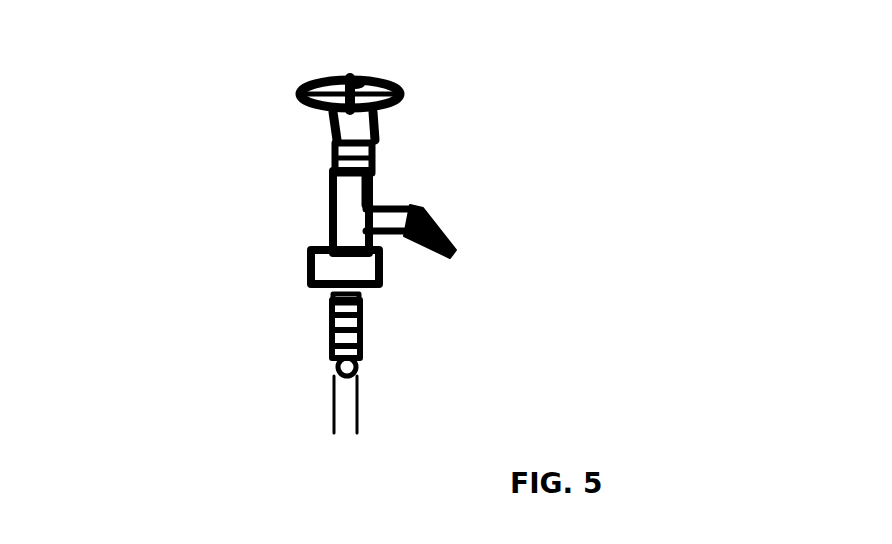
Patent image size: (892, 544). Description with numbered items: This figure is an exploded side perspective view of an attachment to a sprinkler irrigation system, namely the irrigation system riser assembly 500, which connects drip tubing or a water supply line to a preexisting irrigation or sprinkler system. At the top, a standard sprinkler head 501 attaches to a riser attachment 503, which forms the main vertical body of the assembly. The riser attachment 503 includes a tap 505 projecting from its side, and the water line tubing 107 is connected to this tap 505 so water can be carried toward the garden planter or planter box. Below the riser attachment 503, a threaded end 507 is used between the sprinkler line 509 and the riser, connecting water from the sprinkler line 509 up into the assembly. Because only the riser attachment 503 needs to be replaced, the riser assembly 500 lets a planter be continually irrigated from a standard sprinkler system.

The irrigation system riser assembly 500 is at (118, 345).
The sprinkler head 501 is at (396, 93).
The riser attachment 503 is at (372, 177).
The tap 505 is at (372, 203).
The water line tubing 107 is at (440, 227).
The threaded end 507 is at (330, 312).
The sprinkler line 509 is at (365, 398).